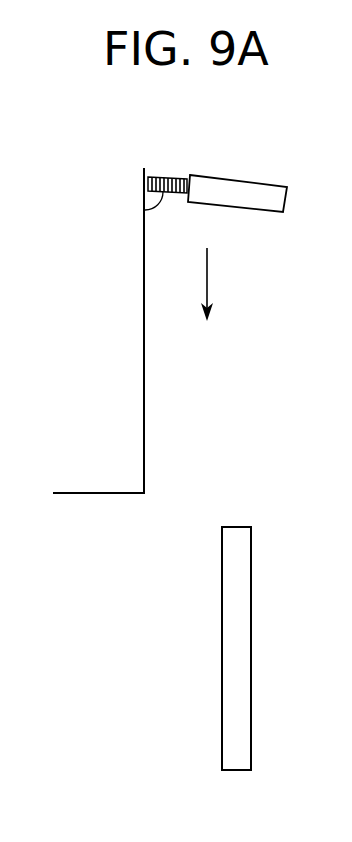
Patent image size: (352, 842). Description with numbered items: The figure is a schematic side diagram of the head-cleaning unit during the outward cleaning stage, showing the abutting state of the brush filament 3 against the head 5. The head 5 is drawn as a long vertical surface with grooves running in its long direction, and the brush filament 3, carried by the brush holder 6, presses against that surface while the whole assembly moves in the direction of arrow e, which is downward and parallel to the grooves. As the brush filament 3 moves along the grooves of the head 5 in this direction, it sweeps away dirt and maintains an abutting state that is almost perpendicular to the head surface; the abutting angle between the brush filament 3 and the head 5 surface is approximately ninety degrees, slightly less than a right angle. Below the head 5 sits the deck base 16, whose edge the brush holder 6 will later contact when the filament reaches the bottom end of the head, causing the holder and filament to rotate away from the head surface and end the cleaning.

The brush filament 3 is at (166, 177).
The head 5 is at (144, 362).
The brush holder 6 is at (248, 178).
The deck base 16 is at (251, 543).
The direction of movement e is at (217, 284).